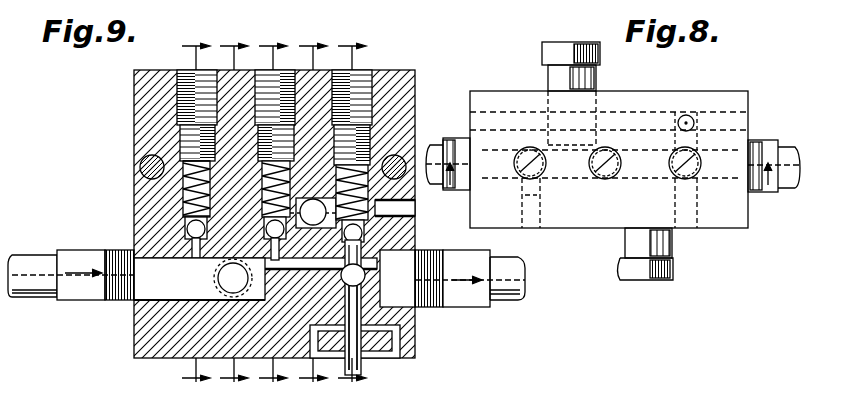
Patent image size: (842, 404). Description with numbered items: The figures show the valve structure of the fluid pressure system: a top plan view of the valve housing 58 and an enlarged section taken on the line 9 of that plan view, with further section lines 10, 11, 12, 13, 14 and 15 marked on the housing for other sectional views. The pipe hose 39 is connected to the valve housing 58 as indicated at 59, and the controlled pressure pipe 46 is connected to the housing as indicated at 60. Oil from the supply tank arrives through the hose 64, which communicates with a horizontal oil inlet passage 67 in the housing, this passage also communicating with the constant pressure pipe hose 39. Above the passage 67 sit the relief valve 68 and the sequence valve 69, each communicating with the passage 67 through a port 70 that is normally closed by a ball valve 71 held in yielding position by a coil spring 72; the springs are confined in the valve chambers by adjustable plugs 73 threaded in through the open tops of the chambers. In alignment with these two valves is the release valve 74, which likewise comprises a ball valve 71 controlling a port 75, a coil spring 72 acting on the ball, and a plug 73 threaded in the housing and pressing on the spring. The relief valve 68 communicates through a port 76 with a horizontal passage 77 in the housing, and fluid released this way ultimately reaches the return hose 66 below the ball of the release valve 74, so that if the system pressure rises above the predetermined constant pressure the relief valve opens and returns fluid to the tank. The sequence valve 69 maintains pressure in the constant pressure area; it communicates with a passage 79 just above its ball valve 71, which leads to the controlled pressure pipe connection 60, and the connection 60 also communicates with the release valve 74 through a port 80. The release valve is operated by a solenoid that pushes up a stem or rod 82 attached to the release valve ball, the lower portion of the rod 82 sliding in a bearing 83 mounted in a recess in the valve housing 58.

In FIG. 8, the section line 9— 9 is at (610, 187).
In FIG. 9, the section line 10— 10 is at (199, 212).
In FIG. 9, the section line 11— 11 is at (237, 212).
In FIG. 9, the section line 12— 12 is at (276, 212).
In FIG. 9, the section line 13— 13 is at (316, 212).
In FIG. 9, the section line 14— 14 is at (355, 212).
In FIG. 9, the section line 15— 15 is at (107, 188).
In FIG. 9, the pipe hose 39 is at (234, 294).
In FIG. 8, the pipe hose 39 is at (552, 50).
In FIG. 8, the controlled pressure pipe 46 is at (674, 276).
In FIG. 9, the valve housing 58 is at (414, 72).
In FIG. 8, the valve housing 58 is at (700, 80).
In FIG. 8, the pipe hose connection 59 is at (556, 86).
In FIG. 9, the controlled pressure pipe connection 60 is at (313, 226).
In FIG. 8, the controlled pressure pipe connection 60 is at (673, 247).
In FIG. 9, the hose 64 is at (78, 256).
In FIG. 8, the hose 64 is at (456, 140).
In FIG. 9, the hose 66 is at (480, 307).
In FIG. 8, the hose 66 is at (770, 140).
In FIG. 9, the horizontal oil inlet passage 67 is at (134, 312).
In FIG. 9, the relief valve 68 is at (180, 193).
In FIG. 9, the sequence valve 69 is at (293, 150).
In FIG. 9, the port 70 is at (201, 242).
In FIG. 9, the ball valve 71 is at (207, 221).
In FIG. 9, the coil spring 72 is at (211, 183).
In FIG. 9, the adjustable plug 73 is at (215, 136).
In FIG. 9, the release valve 74 is at (392, 156).
In FIG. 9, the port 75 is at (400, 258).
In FIG. 9, the port 76 is at (211, 200).
In FIG. 9, the horizontal passage 77 is at (134, 250).
In FIG. 9, the passage 79 is at (304, 200).
In FIG. 8, the passage 79 is at (622, 178).
In FIG. 8, the port 80 is at (668, 135).
In FIG. 9, the stem or rod 82 is at (400, 340).
In FIG. 9, the bearing 83 is at (362, 365).